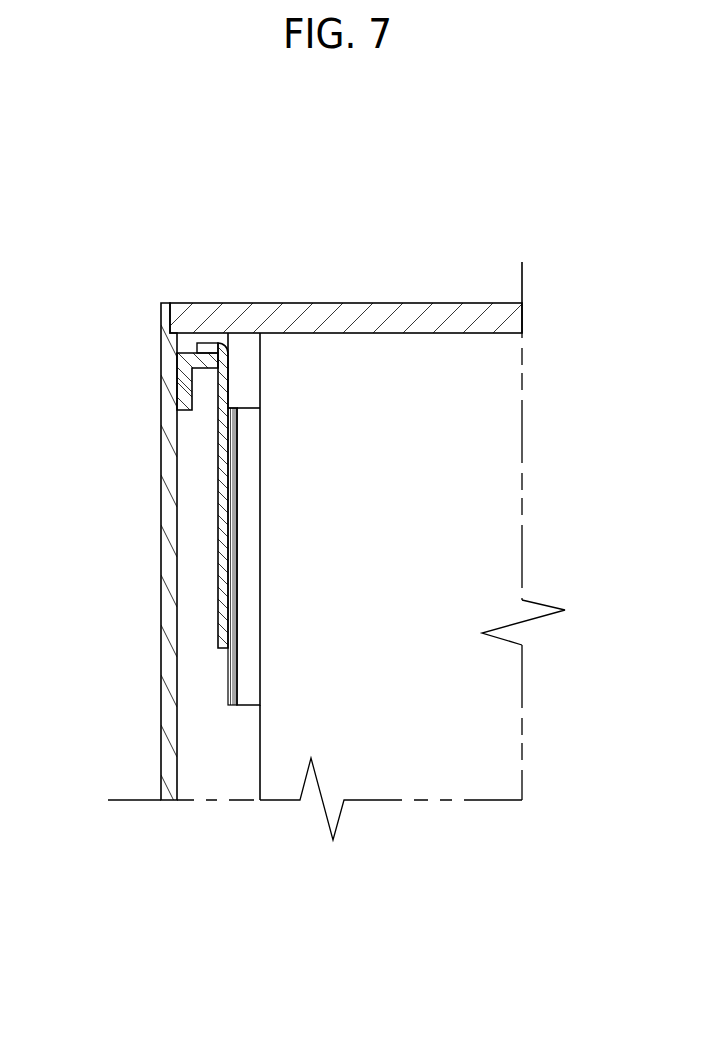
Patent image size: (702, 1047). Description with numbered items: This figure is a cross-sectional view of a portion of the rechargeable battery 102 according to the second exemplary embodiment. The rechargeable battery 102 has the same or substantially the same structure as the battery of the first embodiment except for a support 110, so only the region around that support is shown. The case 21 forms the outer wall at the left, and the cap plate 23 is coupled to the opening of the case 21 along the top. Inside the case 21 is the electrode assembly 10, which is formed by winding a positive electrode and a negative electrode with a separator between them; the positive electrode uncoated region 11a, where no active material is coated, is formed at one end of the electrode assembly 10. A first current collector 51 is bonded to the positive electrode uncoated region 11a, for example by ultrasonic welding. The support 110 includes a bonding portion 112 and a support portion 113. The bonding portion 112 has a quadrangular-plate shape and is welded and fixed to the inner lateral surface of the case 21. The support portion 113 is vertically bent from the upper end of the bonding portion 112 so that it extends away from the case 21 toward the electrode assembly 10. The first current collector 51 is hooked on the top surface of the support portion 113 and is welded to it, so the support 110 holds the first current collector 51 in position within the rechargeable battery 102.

The electrode assembly 10 is at (412, 766).
The positive electrode uncoated region 11a is at (242, 685).
The case 21 is at (168, 509).
The cap plate 23 is at (445, 317).
The first current collector 51 is at (228, 383).
The rechargeable battery 102 is at (353, 252).
The support 110 is at (141, 329).
The bonding portion 112 is at (185, 392).
The support portion 113 is at (207, 360).